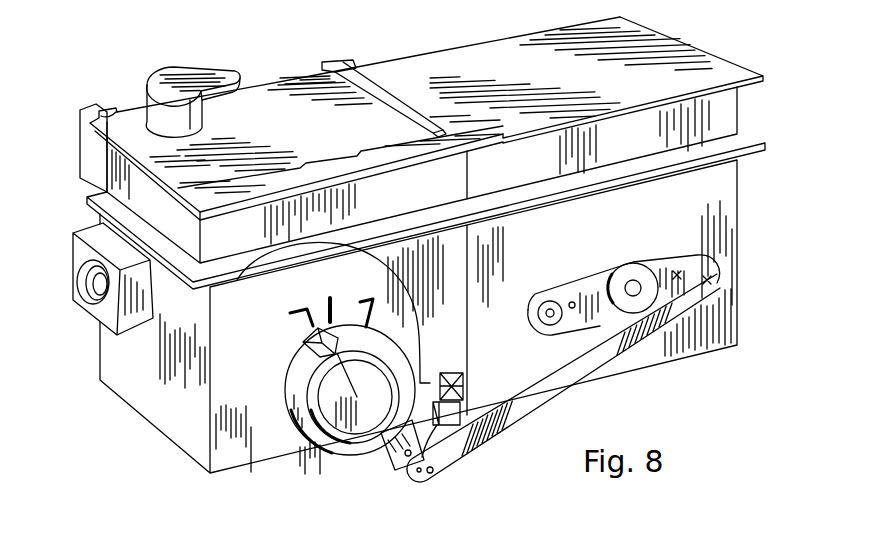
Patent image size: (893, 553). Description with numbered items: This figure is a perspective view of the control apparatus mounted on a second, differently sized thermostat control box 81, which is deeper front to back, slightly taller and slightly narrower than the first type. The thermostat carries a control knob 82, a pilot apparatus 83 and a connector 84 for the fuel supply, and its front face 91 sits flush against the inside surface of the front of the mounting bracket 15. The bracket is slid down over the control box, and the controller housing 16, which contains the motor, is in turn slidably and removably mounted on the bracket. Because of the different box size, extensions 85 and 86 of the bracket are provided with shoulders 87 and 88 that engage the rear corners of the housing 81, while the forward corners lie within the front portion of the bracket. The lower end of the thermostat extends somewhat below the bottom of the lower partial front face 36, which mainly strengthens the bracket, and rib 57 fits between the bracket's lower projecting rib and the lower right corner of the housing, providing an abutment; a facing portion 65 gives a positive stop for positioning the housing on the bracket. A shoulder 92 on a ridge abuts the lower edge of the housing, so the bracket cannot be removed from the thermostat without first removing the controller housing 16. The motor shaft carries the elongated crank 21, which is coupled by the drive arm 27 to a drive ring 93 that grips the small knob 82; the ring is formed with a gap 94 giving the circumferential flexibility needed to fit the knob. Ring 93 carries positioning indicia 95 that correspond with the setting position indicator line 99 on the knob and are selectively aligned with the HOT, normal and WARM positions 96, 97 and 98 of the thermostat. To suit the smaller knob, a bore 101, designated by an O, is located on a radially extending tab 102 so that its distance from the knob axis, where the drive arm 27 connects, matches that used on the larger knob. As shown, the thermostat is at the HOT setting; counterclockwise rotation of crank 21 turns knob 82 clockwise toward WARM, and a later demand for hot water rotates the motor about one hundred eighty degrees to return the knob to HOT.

The mounting bracket 15 is at (383, 72).
The controller housing 16 is at (683, 53).
The crank 21 is at (642, 262).
The drive arm 27 is at (547, 390).
The lower partial front face 36 is at (448, 363).
The rib 57 is at (457, 413).
The facing portion 65 is at (456, 418).
The thermostat control box 81 is at (275, 83).
The control knob 82 is at (327, 440).
The pilot apparatus 83 is at (171, 66).
The connector 84 is at (97, 307).
The extension 85 is at (347, 60).
The extension 86 is at (80, 110).
The shoulder 87 is at (330, 72).
The shoulder 88 is at (113, 111).
The front face 91 is at (222, 418).
The shoulder 92 is at (442, 452).
The drive ring 93 is at (296, 413).
The pointer tab 94 is at (303, 347).
The positioning indicia 95 is at (351, 368).
The HOT position 96 is at (290, 320).
The normal position 97 is at (328, 298).
The WARM position 98 is at (373, 318).
The setting position indicator line 99 is at (292, 393).
The bore 101 is at (413, 472).
The radially extending tab 102 is at (393, 457).